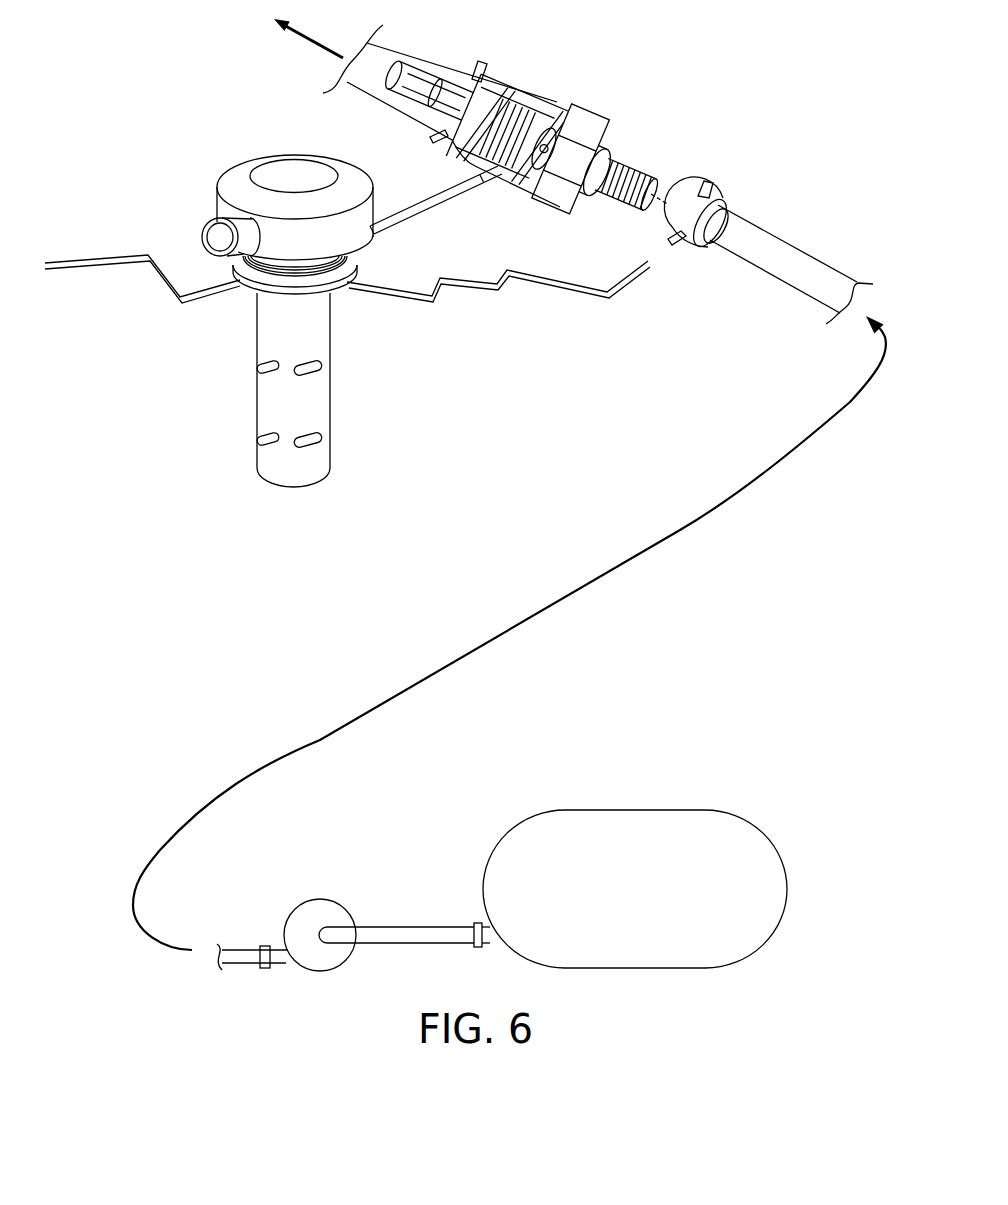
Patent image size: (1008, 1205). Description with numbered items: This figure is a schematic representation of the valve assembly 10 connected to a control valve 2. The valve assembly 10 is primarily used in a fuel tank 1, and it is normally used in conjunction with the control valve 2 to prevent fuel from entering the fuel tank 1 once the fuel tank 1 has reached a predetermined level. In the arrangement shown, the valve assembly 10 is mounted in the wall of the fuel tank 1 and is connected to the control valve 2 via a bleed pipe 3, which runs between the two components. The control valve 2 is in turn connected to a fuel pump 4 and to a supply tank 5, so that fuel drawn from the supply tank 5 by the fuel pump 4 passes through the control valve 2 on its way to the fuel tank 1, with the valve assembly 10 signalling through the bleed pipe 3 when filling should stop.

The fuel tank 1 is at (127, 258).
The control valve 2 is at (577, 115).
The bleed pipe 3 is at (445, 197).
The fuel pump 4 is at (327, 912).
The supply tank 5 is at (657, 905).
The valve assembly 10 is at (160, 165).